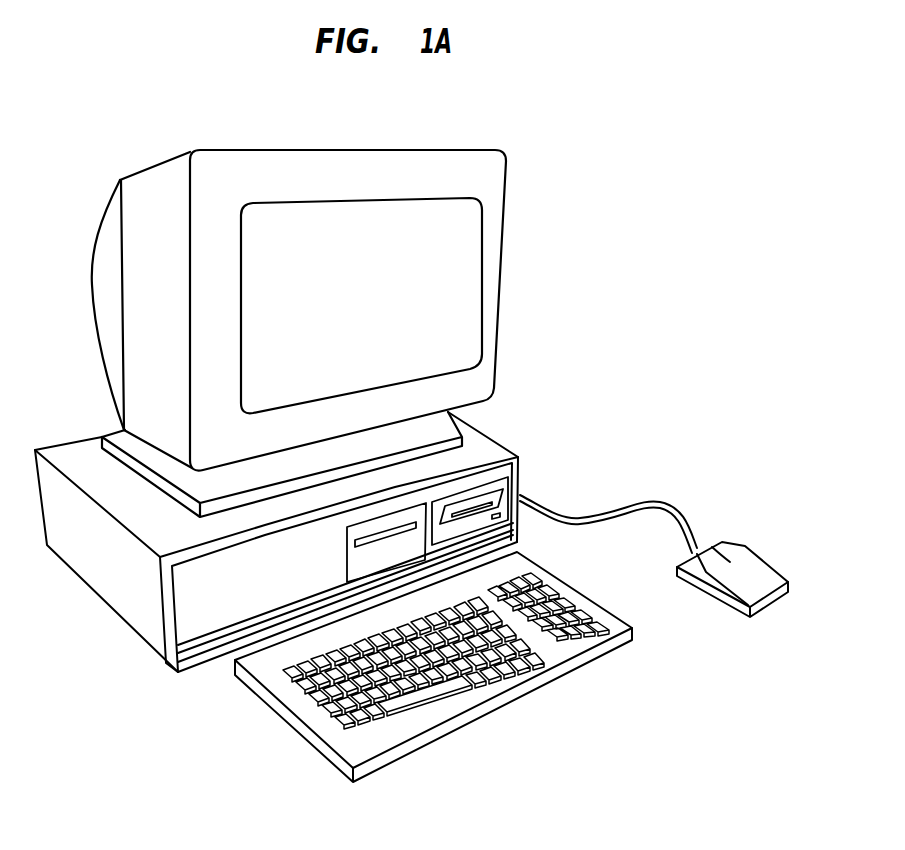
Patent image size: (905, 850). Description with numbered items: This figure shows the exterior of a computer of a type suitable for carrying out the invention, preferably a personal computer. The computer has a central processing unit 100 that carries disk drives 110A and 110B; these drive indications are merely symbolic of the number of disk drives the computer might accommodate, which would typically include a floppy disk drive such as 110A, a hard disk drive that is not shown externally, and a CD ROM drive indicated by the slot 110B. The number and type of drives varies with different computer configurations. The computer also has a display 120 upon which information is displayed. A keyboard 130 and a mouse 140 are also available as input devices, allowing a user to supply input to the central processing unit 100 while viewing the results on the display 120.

The computer system unit 100 is at (85, 560).
The floppy disk drive 110A is at (518, 481).
The disk drive 110B is at (348, 540).
The monitor 120 is at (503, 246).
The keyboard 130 is at (268, 701).
The mouse 140 is at (773, 558).